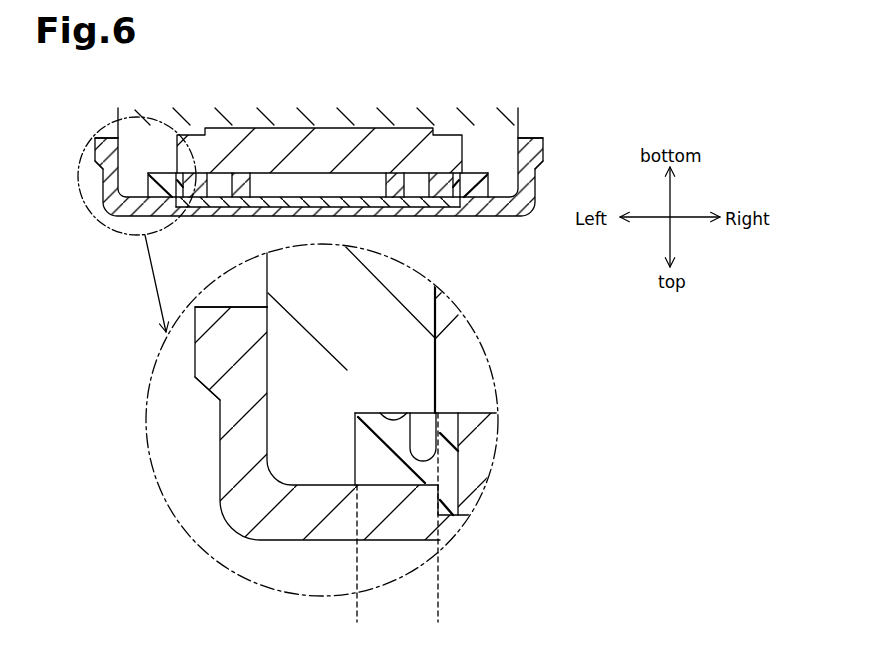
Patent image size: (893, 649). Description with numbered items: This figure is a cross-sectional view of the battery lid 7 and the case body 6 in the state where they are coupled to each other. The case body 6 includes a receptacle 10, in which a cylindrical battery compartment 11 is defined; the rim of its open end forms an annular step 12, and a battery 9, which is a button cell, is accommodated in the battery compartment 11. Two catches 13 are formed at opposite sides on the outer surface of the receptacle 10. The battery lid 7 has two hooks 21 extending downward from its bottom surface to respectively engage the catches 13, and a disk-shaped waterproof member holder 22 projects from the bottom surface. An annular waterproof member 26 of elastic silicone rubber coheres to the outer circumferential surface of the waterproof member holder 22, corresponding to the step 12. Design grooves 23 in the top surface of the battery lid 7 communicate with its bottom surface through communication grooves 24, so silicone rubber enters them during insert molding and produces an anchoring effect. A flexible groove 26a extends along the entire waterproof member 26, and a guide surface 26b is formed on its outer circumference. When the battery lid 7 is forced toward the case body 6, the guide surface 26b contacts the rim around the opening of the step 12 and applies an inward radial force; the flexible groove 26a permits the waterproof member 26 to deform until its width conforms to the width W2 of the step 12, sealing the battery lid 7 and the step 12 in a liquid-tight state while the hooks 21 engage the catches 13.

The case body 6 is at (478, 107).
The battery lid 7 is at (517, 233).
The battery 9 is at (330, 138).
The receptacle 10 is at (120, 137).
The battery compartment 11 is at (389, 137).
The step 12 is at (174, 116).
The catch 13 is at (118, 140).
The hook 21 is at (96, 157).
The waterproof member holder 22 is at (461, 176).
The design groove 23 is at (391, 214).
The communication groove 24 is at (422, 208).
The waterproof member 26 is at (148, 172).
The flexible groove 26a is at (428, 412).
The guide surface 26b is at (355, 414).
The width of the step W2 is at (437, 608).